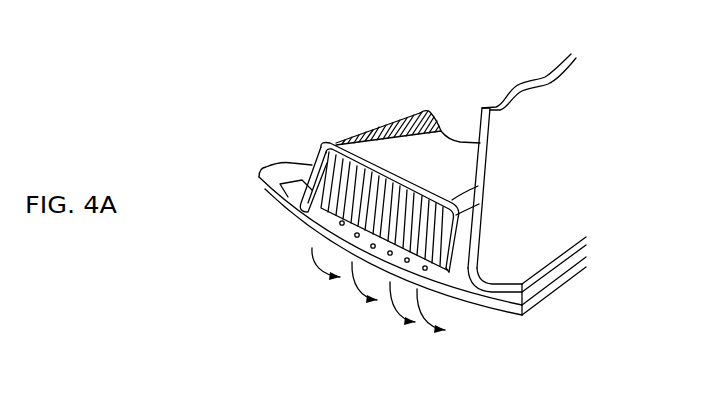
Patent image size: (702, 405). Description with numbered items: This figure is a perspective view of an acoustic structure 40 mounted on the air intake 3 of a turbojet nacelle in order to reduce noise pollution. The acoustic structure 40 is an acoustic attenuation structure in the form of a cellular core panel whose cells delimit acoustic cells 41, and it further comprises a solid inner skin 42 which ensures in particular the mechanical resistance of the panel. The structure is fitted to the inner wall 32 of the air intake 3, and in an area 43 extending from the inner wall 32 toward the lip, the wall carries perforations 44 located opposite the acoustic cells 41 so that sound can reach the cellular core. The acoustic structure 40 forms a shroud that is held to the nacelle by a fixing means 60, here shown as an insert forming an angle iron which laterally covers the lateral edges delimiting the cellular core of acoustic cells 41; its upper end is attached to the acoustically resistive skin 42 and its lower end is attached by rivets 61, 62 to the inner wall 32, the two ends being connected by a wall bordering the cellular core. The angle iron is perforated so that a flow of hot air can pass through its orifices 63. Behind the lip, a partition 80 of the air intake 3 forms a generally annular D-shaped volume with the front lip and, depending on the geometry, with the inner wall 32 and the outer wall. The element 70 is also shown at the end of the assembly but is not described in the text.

The air intake 3 is at (257, 172).
The inner wall 32 is at (478, 307).
The acoustic structure 40 is at (407, 106).
The acoustic cells 41 is at (430, 222).
The inner skin 42 is at (448, 147).
The area 43 is at (383, 280).
The perforations 44 is at (339, 222).
The fixing means 60 is at (374, 123).
The rivet 61 is at (463, 247).
The rivet 62 is at (332, 137).
The orifices 63 is at (307, 170).
The end cap 70 is at (505, 297).
The partition 80 is at (548, 138).